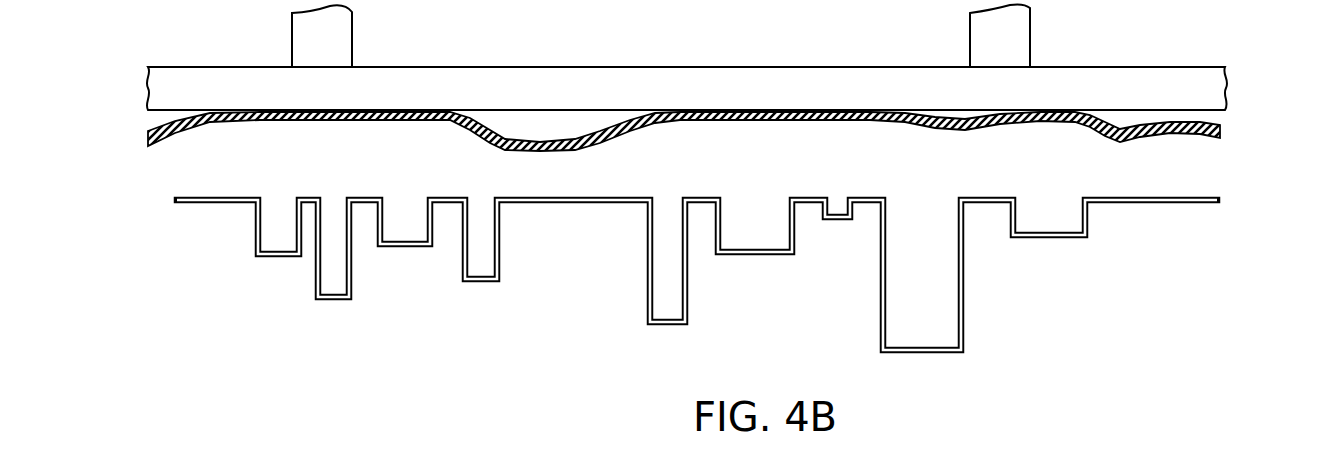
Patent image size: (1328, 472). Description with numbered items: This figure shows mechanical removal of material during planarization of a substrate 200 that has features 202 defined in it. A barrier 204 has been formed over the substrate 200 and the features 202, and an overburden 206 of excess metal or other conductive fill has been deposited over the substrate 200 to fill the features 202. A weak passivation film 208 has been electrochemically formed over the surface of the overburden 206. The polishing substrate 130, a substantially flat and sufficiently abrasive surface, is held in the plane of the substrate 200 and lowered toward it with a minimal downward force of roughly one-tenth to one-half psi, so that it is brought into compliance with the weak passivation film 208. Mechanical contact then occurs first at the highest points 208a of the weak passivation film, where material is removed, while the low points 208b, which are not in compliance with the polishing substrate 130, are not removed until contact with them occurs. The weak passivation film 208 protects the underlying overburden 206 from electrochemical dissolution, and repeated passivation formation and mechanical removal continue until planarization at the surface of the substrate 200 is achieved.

The polishing substrate 130 is at (218, 72).
The substrate 200 is at (260, 298).
The features 202 is at (373, 292).
The barrier 204 is at (177, 198).
The overburden 206 is at (383, 181).
The weak passivation film 208 is at (150, 142).
The highest points of weak passivation film 208a is at (266, 125).
The low points of weak passivation film 208b is at (620, 139).